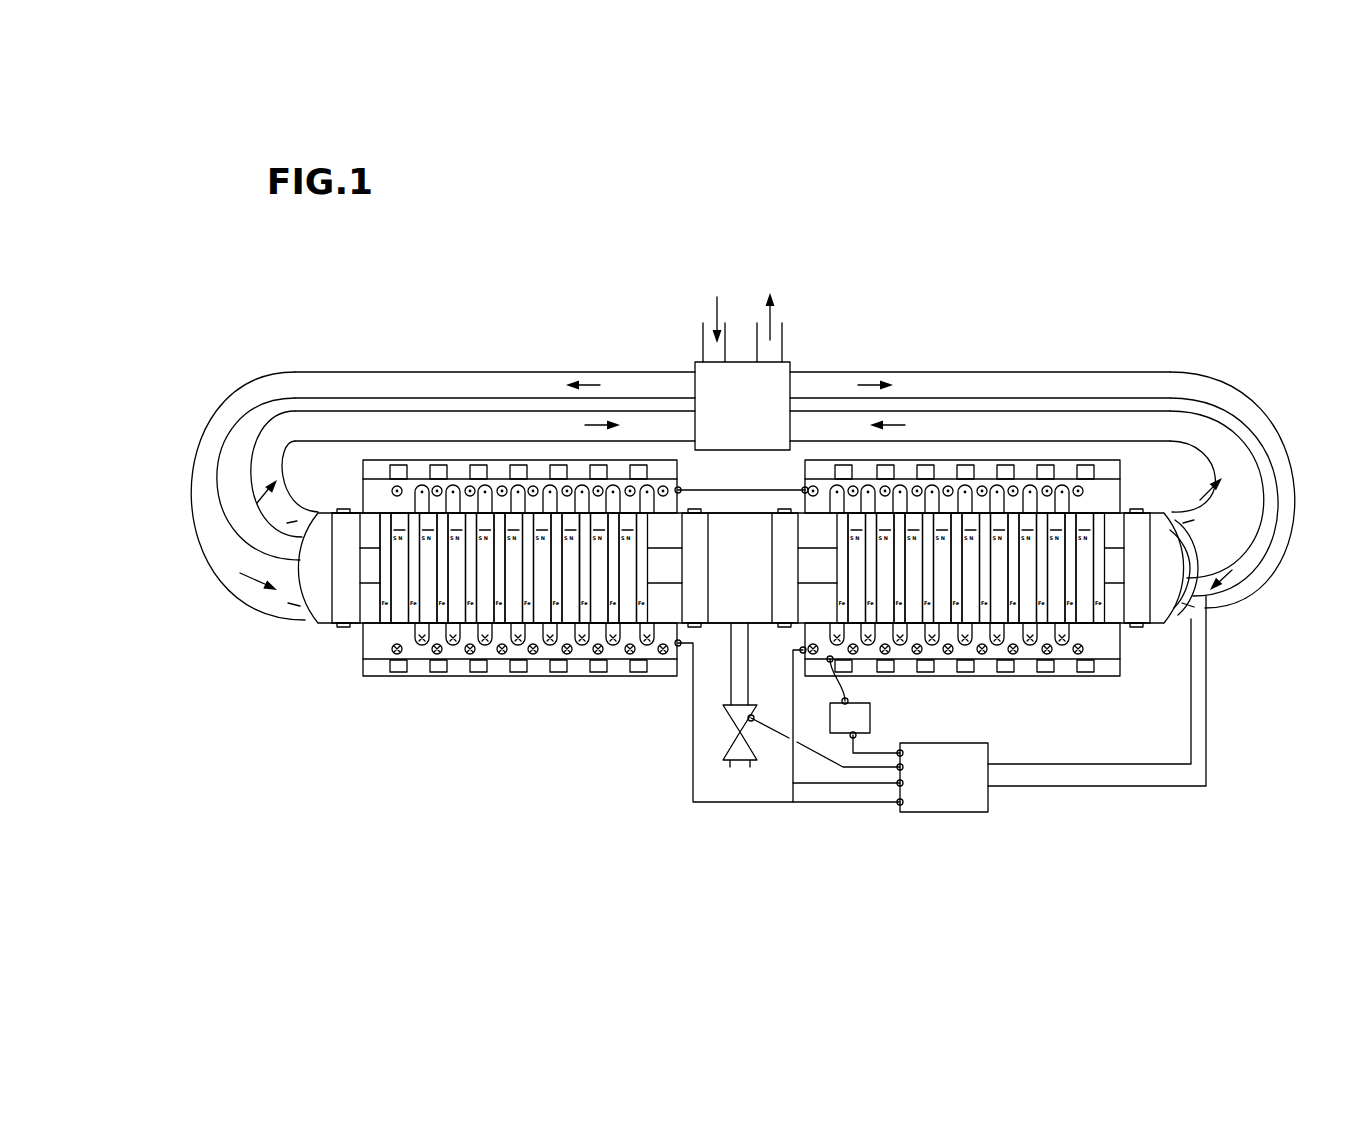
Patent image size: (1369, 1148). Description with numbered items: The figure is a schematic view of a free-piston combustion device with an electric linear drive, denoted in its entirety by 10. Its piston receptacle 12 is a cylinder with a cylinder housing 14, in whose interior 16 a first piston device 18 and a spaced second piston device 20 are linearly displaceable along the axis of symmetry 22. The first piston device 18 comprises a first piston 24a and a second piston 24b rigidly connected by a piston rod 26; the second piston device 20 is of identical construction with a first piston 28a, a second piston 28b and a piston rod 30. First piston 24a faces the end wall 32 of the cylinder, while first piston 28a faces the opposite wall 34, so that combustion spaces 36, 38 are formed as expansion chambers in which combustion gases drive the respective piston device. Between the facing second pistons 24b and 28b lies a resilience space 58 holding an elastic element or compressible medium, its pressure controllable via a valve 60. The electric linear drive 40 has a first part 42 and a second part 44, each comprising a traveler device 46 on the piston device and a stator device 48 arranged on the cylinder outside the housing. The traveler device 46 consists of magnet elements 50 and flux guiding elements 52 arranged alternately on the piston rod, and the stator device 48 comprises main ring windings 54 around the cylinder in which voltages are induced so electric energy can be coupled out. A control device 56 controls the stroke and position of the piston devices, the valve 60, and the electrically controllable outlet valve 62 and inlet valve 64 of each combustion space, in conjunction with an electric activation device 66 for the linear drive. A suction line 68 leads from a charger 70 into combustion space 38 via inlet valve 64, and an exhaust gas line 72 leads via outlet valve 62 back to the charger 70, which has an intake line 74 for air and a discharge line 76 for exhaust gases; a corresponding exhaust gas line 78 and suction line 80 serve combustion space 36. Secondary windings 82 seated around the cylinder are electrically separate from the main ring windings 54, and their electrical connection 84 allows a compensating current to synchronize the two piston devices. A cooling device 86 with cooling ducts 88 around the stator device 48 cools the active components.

The free-piston device 10 is at (577, 328).
The piston receptacle 12 is at (306, 634).
The cylinder housing 14 is at (357, 626).
The interior 16 is at (737, 600).
The first piston device 18 is at (513, 600).
The second piston device 20 is at (1045, 517).
The axis of symmetry 22 is at (1189, 561).
The first piston 24a is at (333, 512).
The second piston 24b is at (702, 537).
The piston rod 26 is at (368, 573).
The first piston 28a is at (1133, 530).
The second piston 28b is at (783, 525).
The piston rod 30 is at (1109, 583).
The end wall 32 is at (250, 560).
The wall 34 is at (1219, 596).
The combustion space 36 is at (250, 432).
The combustion space 38 is at (1264, 463).
The electric linear drive 40 is at (983, 440).
The first part 42 is at (470, 448).
The second part 44 is at (1022, 686).
The traveler device 46 is at (570, 610).
The stator device 48 is at (429, 464).
The magnet elements 50 is at (400, 603).
The flux guiding elements 52 is at (345, 522).
The main ring windings 54 is at (517, 500).
The control device 56 is at (963, 803).
The resilience space 58 is at (747, 530).
The valve 60 is at (740, 732).
The outlet valve 62 is at (1232, 466).
The inlet valve 64 is at (1202, 608).
The electric activation device 66 is at (870, 716).
The suction line 68 is at (1271, 518).
The charger 70 is at (740, 380).
The exhaust gas line 72 is at (1148, 427).
The intake line 74 is at (703, 346).
The discharge line 76 is at (783, 346).
The exhaust gas line 78 is at (257, 512).
The suction line 80 is at (220, 447).
The secondary windings 82 is at (1057, 658).
The electrical connection 84 is at (716, 489).
The cooling device 86 is at (1012, 452).
The cooling ducts 88 is at (922, 468).